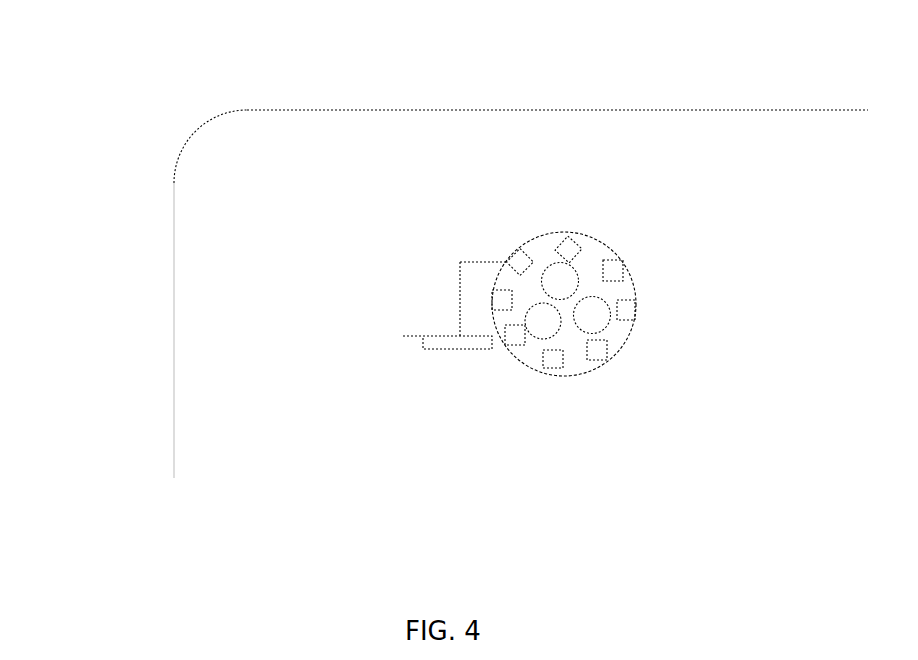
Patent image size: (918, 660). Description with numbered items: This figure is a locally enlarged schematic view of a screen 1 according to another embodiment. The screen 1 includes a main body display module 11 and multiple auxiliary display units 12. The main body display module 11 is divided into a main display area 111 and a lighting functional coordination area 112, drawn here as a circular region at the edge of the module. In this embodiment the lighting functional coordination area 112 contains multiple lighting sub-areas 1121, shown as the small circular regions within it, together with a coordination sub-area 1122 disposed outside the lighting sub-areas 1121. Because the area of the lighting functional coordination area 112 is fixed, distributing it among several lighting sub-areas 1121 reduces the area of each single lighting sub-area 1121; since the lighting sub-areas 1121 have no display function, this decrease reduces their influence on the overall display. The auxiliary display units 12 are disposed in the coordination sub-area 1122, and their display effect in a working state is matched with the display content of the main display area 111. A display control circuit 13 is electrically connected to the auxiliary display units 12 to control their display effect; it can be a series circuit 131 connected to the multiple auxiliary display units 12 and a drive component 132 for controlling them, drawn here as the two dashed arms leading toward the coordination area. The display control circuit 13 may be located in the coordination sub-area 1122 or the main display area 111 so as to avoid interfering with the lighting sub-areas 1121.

The screen 1 is at (148, 65).
The main body display module 11 is at (382, 110).
The main display area 111 is at (378, 228).
The lighting functional coordination area 112 is at (632, 280).
The lighting sub-area 1121 is at (555, 283).
The coordination sub-area 1122 is at (624, 291).
The auxiliary display unit 12 is at (597, 350).
The display control circuit 13 is at (88, 368).
The series circuit 131 is at (460, 292).
The drive component 132 is at (403, 336).